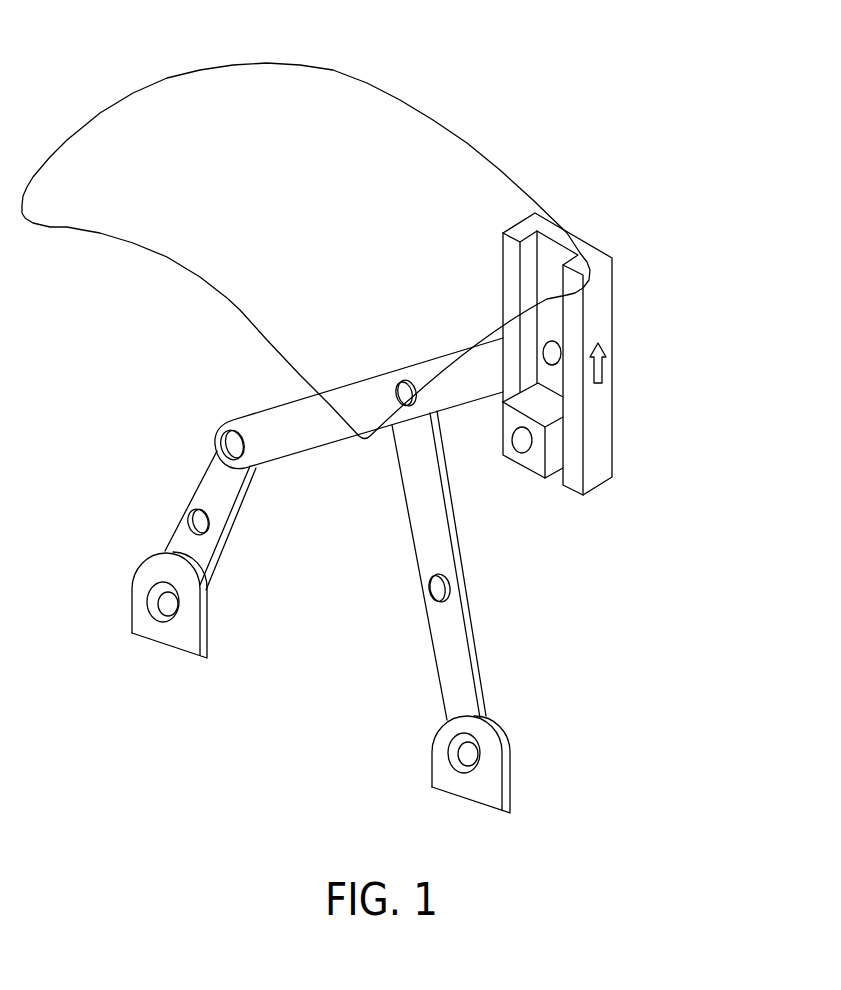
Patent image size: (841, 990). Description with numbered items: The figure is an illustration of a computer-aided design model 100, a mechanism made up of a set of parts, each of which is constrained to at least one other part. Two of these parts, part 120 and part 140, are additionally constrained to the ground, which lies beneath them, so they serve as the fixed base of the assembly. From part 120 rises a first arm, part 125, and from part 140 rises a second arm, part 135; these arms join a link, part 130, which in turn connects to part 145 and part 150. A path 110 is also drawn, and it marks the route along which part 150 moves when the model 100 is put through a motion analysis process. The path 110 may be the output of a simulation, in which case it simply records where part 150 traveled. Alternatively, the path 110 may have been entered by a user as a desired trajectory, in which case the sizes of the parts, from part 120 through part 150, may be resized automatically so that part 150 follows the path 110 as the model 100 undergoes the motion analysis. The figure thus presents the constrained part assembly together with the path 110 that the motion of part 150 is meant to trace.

The CAD model 100 is at (653, 132).
The path 110 is at (228, 65).
The part 120 is at (142, 600).
The part 125 is at (182, 547).
The part 130 is at (305, 432).
The part 135 is at (458, 670).
The part 140 is at (502, 780).
The part 145 is at (527, 462).
The part 150 is at (607, 413).